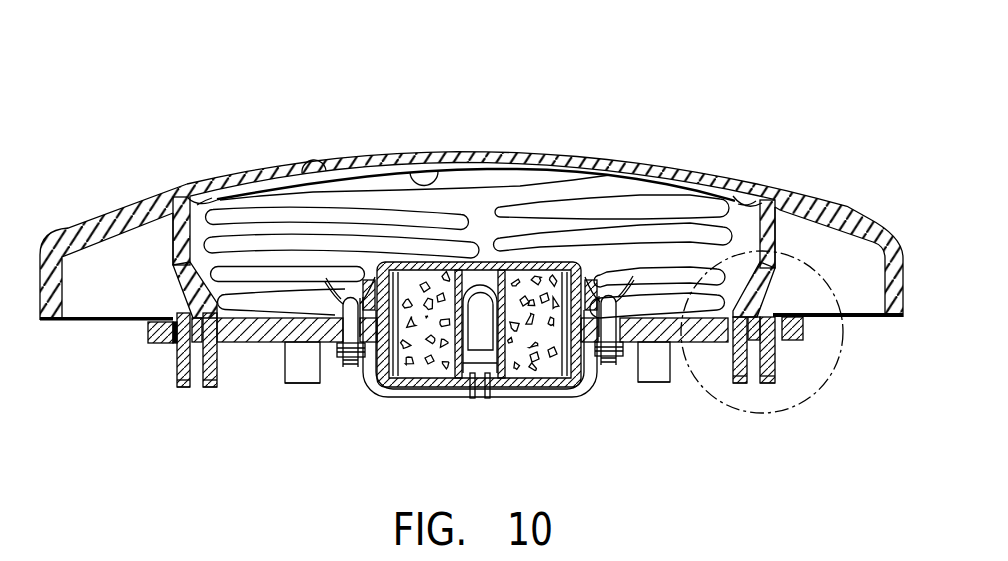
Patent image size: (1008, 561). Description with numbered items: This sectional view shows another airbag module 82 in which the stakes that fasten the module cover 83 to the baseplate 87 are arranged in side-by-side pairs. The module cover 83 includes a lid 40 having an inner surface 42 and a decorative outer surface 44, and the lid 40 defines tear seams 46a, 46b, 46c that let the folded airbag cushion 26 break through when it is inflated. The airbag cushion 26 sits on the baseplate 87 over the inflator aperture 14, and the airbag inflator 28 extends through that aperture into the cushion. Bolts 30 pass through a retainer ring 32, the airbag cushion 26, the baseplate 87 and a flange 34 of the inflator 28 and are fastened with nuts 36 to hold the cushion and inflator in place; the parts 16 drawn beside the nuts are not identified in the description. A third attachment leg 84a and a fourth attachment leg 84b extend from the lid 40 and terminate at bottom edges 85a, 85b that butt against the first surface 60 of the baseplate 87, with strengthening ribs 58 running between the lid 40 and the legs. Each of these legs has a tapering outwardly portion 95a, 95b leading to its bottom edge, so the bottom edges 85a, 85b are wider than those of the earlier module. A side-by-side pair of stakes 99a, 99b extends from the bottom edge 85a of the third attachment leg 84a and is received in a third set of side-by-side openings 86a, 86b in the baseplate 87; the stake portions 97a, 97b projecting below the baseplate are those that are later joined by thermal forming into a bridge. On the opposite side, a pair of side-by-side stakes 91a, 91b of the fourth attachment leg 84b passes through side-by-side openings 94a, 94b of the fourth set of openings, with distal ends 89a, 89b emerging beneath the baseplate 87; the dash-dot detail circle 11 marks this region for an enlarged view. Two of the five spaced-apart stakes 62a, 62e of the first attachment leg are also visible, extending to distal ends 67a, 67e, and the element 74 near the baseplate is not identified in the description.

The airbag module 82 is at (568, 80).
The lid 40 is at (851, 207).
The decorative outer surface 44 is at (460, 152).
The module cover 83 is at (790, 187).
The inner surface 42 is at (405, 167).
The tear seam 46a is at (205, 192).
The tear seam 46b is at (305, 167).
The tear seam 46c is at (756, 192).
The airbag cushion 26 is at (652, 195).
The third attachment leg 84a is at (173, 236).
The fourth attachment leg 84b is at (778, 233).
The bottom edge 85a is at (190, 316).
The bottom edge 85b is at (768, 294).
The cavity 95a is at (172, 264).
The tapering outwardly portion 95b is at (822, 280).
The strengthening ribs 58 is at (88, 320).
The first surface 60 is at (157, 314).
The baseplate 87 is at (150, 330).
The spacer 74 is at (163, 345).
The side-by-side opening 86a is at (177, 382).
The side-by-side opening 86b is at (218, 358).
The stake 99a is at (183, 390).
The bar foot 97a is at (187, 392).
The stake 99b is at (210, 390).
The bar foot 97b is at (204, 393).
The side-by-side opening 94a is at (777, 359).
The side-by-side opening 94b is at (736, 353).
The stake 91a is at (777, 382).
The stake 91b is at (748, 386).
The distal end 89a is at (768, 385).
The distal end 89b is at (742, 386).
The stake 62a is at (285, 375).
The stake 62e is at (671, 380).
The distal end 67a is at (307, 384).
The distal end 67e is at (652, 384).
The bolts 30 is at (352, 368).
The nut 16 is at (338, 352).
The nuts 36 is at (357, 372).
The flange 34 is at (397, 397).
The airbag inflator 28 is at (442, 397).
The retainer ring 32 is at (584, 275).
The inflator aperture 14 is at (560, 370).
The detail circle 11 is at (810, 400).